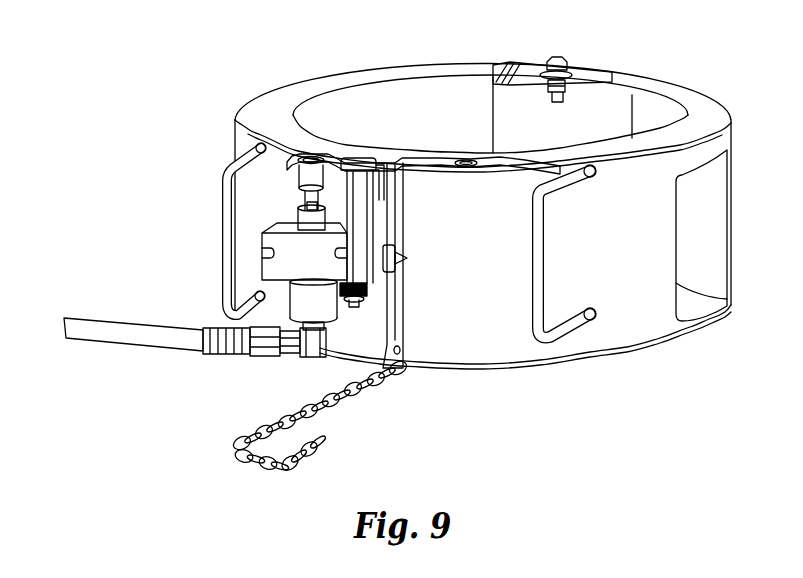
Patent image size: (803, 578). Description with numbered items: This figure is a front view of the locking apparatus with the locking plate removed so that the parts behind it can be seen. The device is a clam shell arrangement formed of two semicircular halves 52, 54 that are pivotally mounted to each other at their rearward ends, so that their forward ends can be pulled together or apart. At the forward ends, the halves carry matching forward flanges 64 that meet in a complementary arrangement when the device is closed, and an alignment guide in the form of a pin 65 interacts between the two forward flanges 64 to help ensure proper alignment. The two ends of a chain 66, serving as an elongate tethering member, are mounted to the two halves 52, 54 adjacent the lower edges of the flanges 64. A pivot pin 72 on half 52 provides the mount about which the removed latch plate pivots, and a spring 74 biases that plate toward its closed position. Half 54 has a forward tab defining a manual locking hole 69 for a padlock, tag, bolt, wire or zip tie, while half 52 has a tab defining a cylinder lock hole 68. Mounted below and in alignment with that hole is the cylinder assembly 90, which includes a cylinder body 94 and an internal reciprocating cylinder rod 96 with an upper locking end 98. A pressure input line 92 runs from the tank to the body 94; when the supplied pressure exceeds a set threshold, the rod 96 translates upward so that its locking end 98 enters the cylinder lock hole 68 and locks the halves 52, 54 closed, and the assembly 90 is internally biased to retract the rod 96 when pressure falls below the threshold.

The semicircular half 52 is at (483, 103).
The semicircular half 54 is at (483, 263).
The forward flange 64 is at (423, 291).
The pin 65 is at (431, 259).
The chain 66 is at (319, 416).
The cylinder lock hole 68 is at (324, 102).
The manual locking hole 69 is at (464, 129).
The pivot pin 72 is at (363, 208).
The spring 74 is at (325, 319).
The cylinder assembly 90 is at (264, 357).
The pressure input line 92 is at (133, 302).
The cylinder body 94 is at (266, 253).
The cylinder rod 96 is at (258, 197).
The upper locking end 98 is at (233, 224).